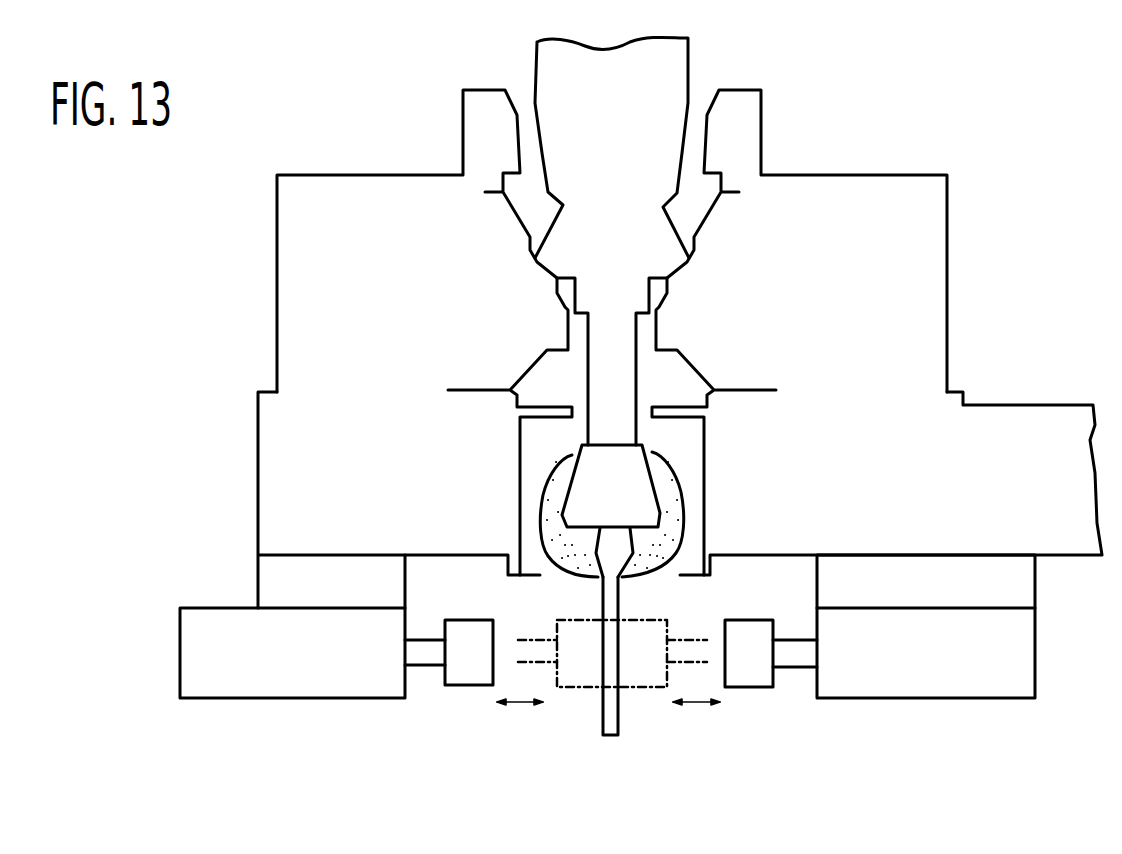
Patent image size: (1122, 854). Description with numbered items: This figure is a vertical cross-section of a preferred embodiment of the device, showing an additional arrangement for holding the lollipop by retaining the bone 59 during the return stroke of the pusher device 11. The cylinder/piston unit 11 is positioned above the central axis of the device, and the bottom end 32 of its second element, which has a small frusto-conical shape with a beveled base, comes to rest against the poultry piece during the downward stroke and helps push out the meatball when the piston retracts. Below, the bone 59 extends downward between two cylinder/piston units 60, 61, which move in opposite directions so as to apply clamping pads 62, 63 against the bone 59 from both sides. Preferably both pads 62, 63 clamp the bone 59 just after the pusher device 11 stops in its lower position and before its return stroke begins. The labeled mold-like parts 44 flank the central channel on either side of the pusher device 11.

The cylinder/piston unit 11 is at (703, 62).
The mold parts 44 is at (504, 346).
The bottom end of the second element 32 is at (578, 500).
The bone 59 is at (600, 713).
The cylinder/piston unit 60 is at (997, 700).
The cylinder/piston unit 61 is at (348, 700).
The clamping pad 62 is at (750, 686).
The clamping pad 63 is at (452, 700).